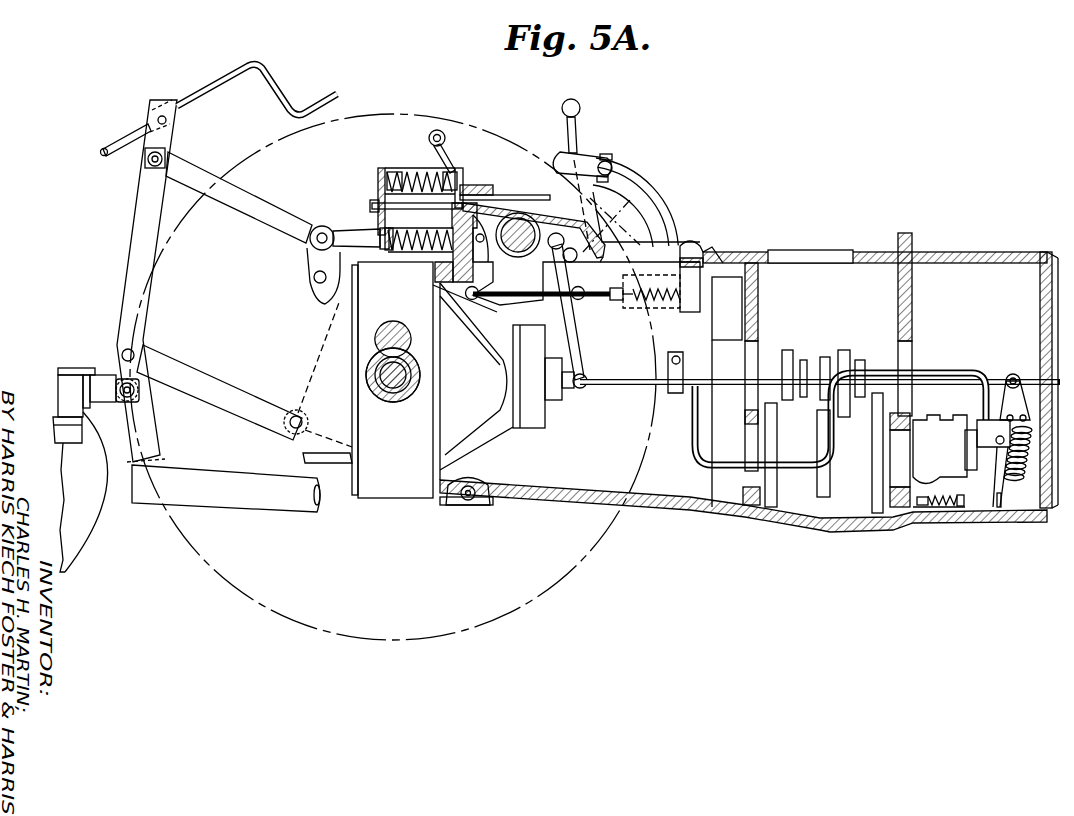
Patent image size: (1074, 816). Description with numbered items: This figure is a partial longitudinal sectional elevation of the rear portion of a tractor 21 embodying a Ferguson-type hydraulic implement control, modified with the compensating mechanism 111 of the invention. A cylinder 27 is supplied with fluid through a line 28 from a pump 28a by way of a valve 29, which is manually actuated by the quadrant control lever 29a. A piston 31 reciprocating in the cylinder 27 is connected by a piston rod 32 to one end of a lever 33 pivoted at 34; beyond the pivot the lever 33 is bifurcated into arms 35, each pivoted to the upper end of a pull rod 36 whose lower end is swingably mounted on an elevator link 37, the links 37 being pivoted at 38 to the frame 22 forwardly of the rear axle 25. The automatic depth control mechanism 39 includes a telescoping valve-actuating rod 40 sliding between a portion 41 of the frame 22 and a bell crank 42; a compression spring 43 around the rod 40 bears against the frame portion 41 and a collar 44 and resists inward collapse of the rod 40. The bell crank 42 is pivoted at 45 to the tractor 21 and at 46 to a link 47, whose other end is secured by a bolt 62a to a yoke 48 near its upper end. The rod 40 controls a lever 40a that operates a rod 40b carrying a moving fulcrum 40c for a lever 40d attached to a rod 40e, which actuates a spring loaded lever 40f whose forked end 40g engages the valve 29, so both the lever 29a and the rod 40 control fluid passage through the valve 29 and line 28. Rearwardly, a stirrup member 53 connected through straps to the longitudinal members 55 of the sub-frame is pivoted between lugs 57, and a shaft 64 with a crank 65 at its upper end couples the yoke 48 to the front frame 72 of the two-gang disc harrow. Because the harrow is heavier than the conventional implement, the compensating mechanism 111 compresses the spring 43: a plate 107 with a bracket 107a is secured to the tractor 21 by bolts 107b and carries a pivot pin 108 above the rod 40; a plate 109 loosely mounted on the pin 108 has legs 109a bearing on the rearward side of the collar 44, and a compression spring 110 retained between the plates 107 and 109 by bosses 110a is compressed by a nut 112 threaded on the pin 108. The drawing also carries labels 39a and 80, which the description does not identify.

The tractor 21 is at (840, 245).
The frame 22 is at (412, 499).
The rear axle 25 is at (394, 395).
The cylinder 27 is at (583, 341).
The line 28 is at (690, 452).
The pump 28a is at (930, 478).
The valve 29 is at (956, 522).
The quadrant control lever 29a is at (582, 118).
The piston 31 is at (660, 302).
The piston rod 32 is at (543, 366).
The lever 33 is at (474, 378).
The pivot 34 is at (588, 166).
The arms 35 is at (470, 108).
The pull rod 36 is at (322, 347).
The elevator lever or link 37 is at (190, 368).
The pivot 38 is at (289, 432).
The automatic depth control mechanism 39 is at (414, 254).
The spring seat 39a is at (381, 166).
The telescoping valve member 40 is at (328, 226).
The lever 40a is at (462, 308).
The rod 40b is at (502, 318).
The moving fulcrum 40c is at (583, 306).
The lever 40d is at (582, 389).
The rod 40e is at (757, 377).
The spring loaded lever 40f is at (998, 418).
The forked end 40g is at (1003, 482).
The frame portion 41 is at (452, 298).
The bell crank 42 is at (310, 266).
The compression spring 43 is at (370, 207).
The collar 44 is at (410, 252).
The pivot 45 is at (318, 300).
The pivot 46 is at (316, 228).
The link 47 is at (250, 214).
The yoke 48 is at (95, 251).
The stirrup member 53 is at (155, 447).
The longitudinal members 55 is at (262, 512).
The lugs 57 is at (110, 375).
The bolt 62a is at (168, 158).
The shaft 64 is at (135, 132).
The crank 65 is at (285, 90).
The front frame 72 is at (50, 366).
The blade 80 is at (92, 547).
The plate 107 is at (480, 184).
The bracket 107a is at (492, 198).
The bolts 107b is at (576, 150).
The pivot pin 108 is at (440, 185).
The plate 109 is at (398, 170).
The legs 109a is at (308, 249).
The compression spring 110 is at (440, 165).
The boss 110a is at (420, 168).
The compensating mechanism 111 is at (430, 166).
The nut 112 is at (372, 203).